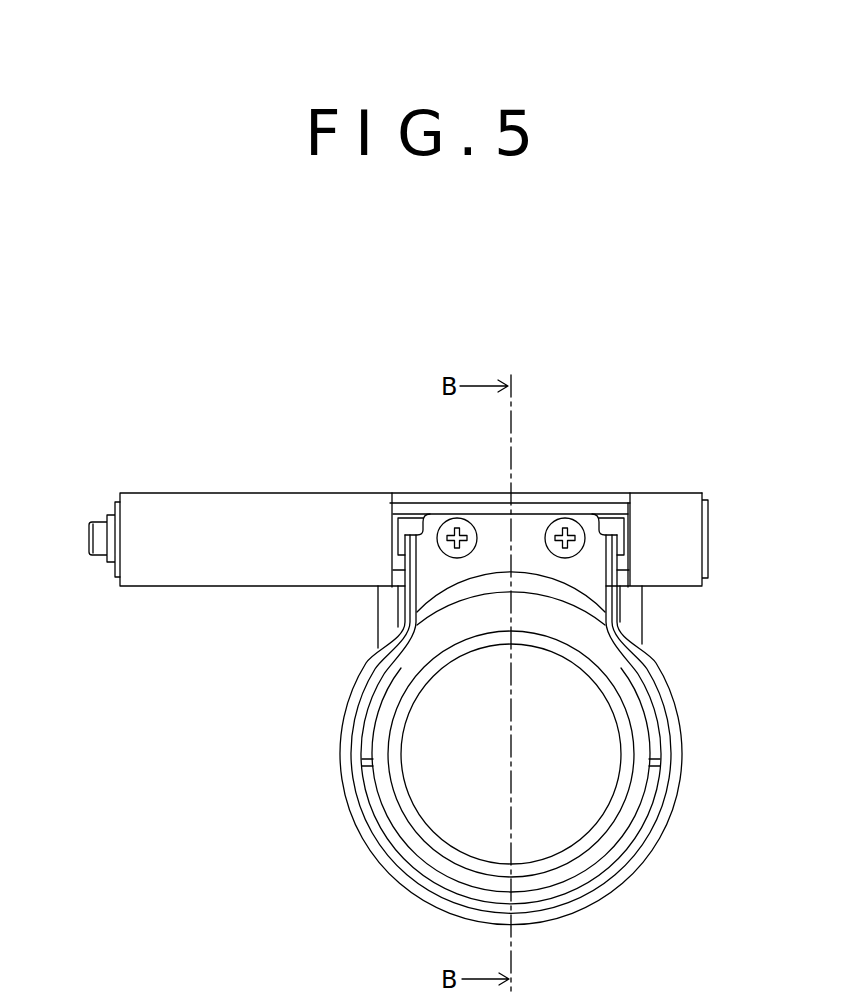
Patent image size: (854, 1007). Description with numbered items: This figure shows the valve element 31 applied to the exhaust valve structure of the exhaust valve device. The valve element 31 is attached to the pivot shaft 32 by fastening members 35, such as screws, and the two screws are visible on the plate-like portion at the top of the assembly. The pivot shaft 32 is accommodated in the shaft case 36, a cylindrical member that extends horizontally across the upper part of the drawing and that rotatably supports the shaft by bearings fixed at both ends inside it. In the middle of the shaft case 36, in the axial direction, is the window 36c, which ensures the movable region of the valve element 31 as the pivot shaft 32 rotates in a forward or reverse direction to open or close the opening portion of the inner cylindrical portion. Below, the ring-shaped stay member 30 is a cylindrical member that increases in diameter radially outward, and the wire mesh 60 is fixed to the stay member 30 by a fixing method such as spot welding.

The stay member 30 is at (617, 880).
The valve element 31 is at (640, 707).
The pivot shaft 32 is at (604, 522).
The fastening members 35 is at (459, 533).
The shaft case 36 is at (686, 508).
The window 36c is at (395, 506).
The wire mesh 60 is at (630, 852).